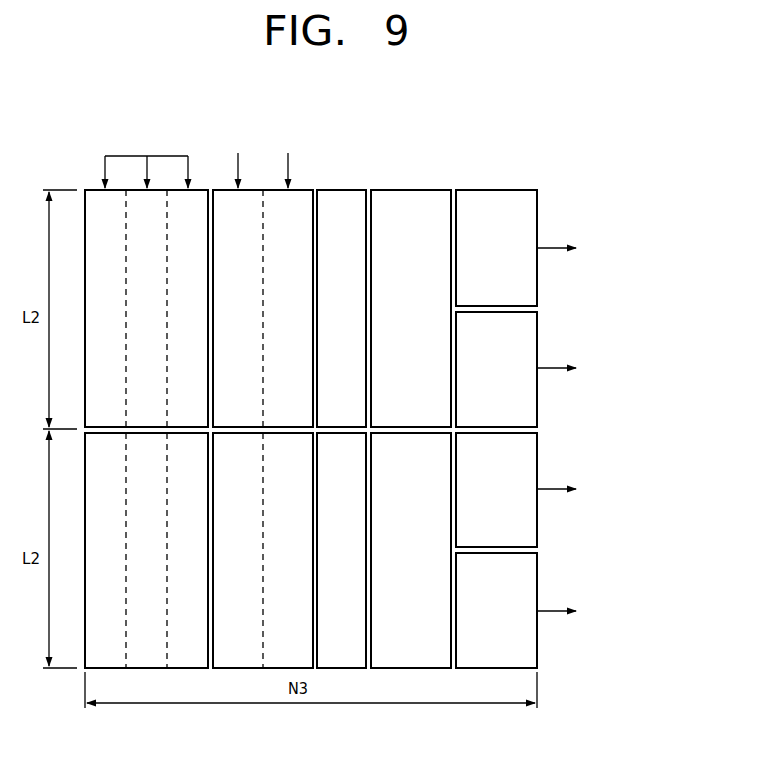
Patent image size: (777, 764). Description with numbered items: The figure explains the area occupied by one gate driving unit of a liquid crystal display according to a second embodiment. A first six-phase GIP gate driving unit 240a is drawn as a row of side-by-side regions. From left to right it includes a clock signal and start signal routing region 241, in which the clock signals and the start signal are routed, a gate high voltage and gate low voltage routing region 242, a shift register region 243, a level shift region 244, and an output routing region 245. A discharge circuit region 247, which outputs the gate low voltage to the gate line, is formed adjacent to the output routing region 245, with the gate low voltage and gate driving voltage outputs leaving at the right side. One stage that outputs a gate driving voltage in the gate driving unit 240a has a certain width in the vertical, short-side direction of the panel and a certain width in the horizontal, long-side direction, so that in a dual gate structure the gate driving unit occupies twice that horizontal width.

The first 6-phase GIP gate driving unit 240a is at (599, 158).
The clock signal and start signal routing region 241 is at (197, 190).
The gate high voltage and gate low voltage routing region 242 is at (268, 190).
The shift register region 243 is at (344, 190).
The level shift region 244 is at (414, 190).
The output routing region 245 is at (537, 328).
The discharge circuit region 247 is at (498, 190).